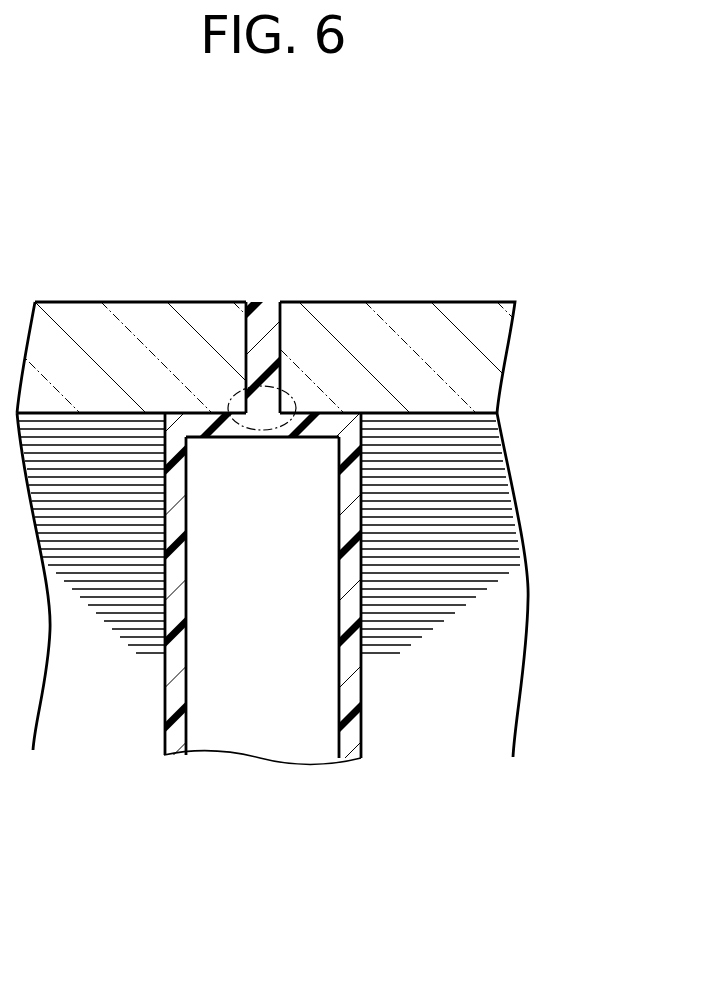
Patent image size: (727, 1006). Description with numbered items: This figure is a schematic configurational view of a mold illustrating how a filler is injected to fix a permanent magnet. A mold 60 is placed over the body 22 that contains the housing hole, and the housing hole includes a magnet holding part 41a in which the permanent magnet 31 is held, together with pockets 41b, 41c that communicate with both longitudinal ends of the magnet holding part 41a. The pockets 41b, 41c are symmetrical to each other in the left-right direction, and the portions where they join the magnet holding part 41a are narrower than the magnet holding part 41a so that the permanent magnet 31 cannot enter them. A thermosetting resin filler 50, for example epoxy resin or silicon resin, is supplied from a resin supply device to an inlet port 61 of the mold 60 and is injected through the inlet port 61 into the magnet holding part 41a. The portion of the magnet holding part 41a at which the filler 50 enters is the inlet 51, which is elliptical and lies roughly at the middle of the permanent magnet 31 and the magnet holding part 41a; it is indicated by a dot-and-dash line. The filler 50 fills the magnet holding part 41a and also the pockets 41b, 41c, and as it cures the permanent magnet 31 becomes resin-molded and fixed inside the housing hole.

The body 22 is at (493, 658).
The permanent magnet 31 is at (263, 738).
The magnet holding part 41a is at (230, 438).
The pocket 41b is at (353, 688).
The pocket 41c is at (173, 694).
The filler 50 is at (312, 438).
The inlet 51 is at (298, 393).
The mold 60 is at (402, 312).
The inlet port 61 is at (265, 307).